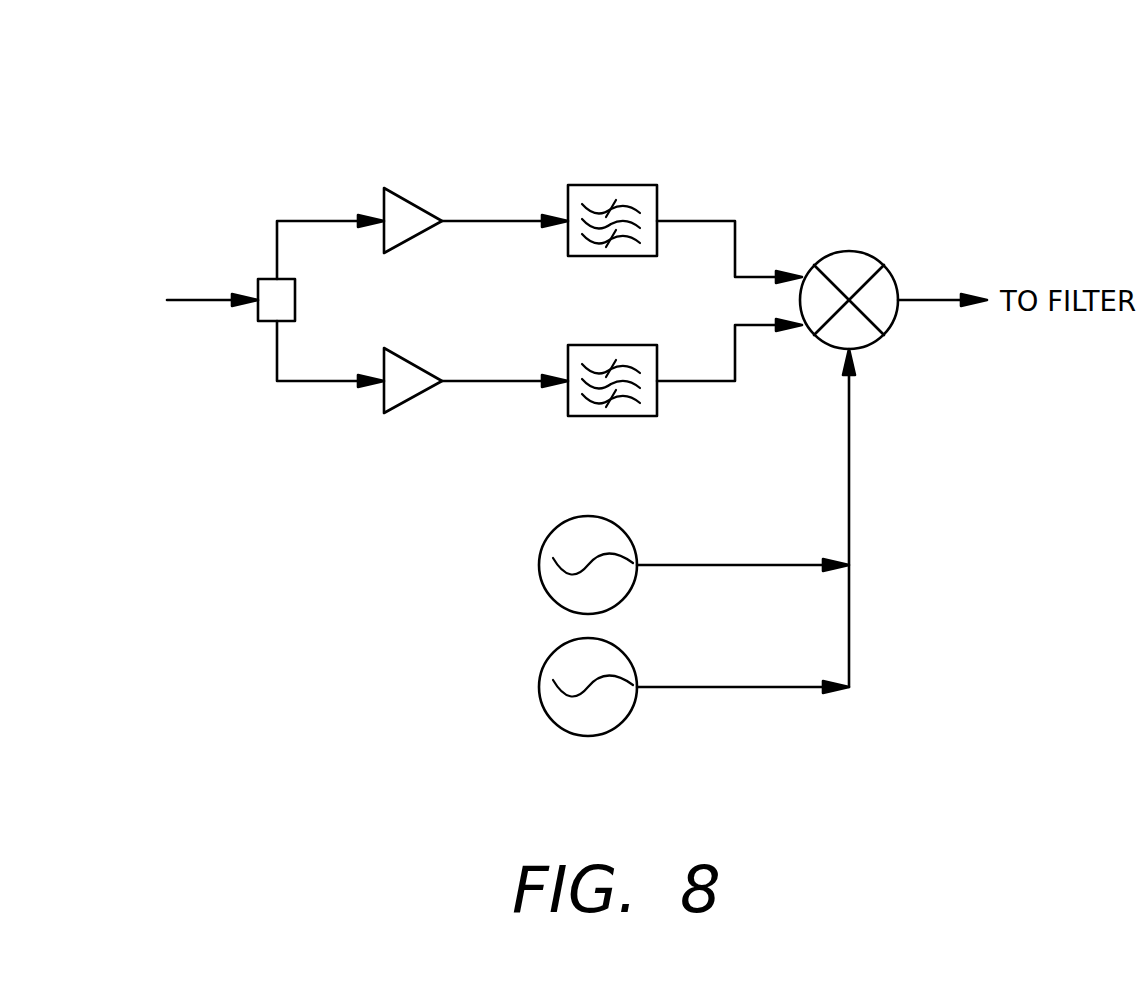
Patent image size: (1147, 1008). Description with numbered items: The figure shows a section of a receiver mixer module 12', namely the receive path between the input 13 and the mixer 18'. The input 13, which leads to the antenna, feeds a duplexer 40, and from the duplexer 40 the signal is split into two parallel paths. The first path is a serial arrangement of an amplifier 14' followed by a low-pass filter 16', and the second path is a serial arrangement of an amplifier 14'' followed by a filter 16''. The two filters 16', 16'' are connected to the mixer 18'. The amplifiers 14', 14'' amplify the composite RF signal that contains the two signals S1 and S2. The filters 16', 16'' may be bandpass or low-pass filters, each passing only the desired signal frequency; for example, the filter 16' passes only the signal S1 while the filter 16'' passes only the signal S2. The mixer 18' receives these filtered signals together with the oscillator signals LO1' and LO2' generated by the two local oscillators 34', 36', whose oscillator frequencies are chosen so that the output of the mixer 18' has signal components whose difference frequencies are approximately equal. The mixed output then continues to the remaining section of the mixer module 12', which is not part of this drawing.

The mixer module 12' is at (803, 61).
The input 13 is at (178, 298).
The duplexer 40 is at (276, 323).
The amplifier 14' is at (399, 188).
The amplifier 14'' is at (392, 416).
The low-pass filter 16' is at (608, 187).
The filter 16'' is at (611, 410).
The mixer 18' is at (862, 272).
The local oscillator 34' is at (655, 566).
The local oscillator 36' is at (659, 686).